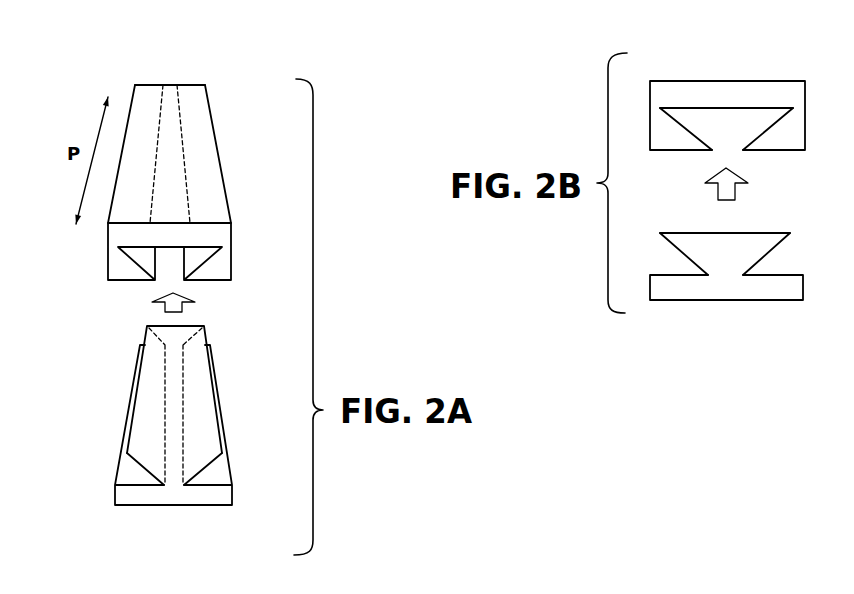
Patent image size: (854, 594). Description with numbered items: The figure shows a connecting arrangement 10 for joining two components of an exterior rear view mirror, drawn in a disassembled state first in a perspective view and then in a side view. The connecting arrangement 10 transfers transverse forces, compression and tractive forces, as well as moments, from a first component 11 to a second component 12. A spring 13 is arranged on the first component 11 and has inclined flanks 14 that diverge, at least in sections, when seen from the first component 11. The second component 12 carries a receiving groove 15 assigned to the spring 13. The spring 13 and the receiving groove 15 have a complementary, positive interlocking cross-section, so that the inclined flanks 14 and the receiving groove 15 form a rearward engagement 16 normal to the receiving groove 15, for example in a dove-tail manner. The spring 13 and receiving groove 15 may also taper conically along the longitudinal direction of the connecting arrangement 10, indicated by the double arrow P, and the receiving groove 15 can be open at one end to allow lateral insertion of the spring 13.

In FIG. 2A, the connecting arrangement 10 is at (66, 80).
In FIG. 2A, the first component 11 is at (140, 497).
In FIG. 2B, the first component 11 is at (715, 292).
In FIG. 2A, the second component 12 is at (142, 105).
In FIG. 2B, the second component 12 is at (680, 90).
In FIG. 2A, the spring 13 is at (172, 477).
In FIG. 2B, the spring 13 is at (743, 243).
In FIG. 2A, the inclined flanks 14 is at (143, 472).
In FIG. 2B, the inclined flanks 14 is at (691, 262).
In FIG. 2A, the receiving groove 15 is at (193, 80).
In FIG. 2B, the receiving groove 15 is at (733, 115).
In FIG. 2B, the rearward engagement 16 is at (693, 128).